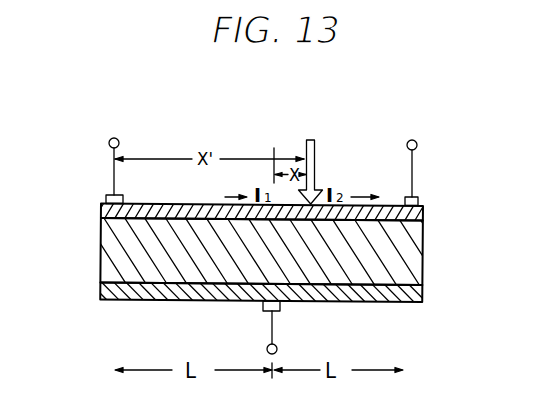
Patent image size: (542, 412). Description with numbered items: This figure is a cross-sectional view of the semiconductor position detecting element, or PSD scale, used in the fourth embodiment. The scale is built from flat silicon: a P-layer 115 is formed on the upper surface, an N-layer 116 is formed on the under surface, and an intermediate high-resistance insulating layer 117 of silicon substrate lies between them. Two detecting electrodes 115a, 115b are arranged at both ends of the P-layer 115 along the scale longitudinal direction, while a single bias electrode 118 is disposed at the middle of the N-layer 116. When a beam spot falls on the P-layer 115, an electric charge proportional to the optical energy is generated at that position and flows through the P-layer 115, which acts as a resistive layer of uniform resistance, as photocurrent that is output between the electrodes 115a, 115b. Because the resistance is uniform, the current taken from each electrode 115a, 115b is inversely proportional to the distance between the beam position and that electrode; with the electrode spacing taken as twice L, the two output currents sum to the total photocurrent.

The detecting electrode 115a is at (107, 196).
The detecting electrode 115b is at (420, 197).
The P-layer 115 is at (423, 208).
The intermediate high-resistance insulating layer 117 is at (416, 257).
The N-layer 116 is at (418, 292).
The bias electrode 118 is at (283, 306).